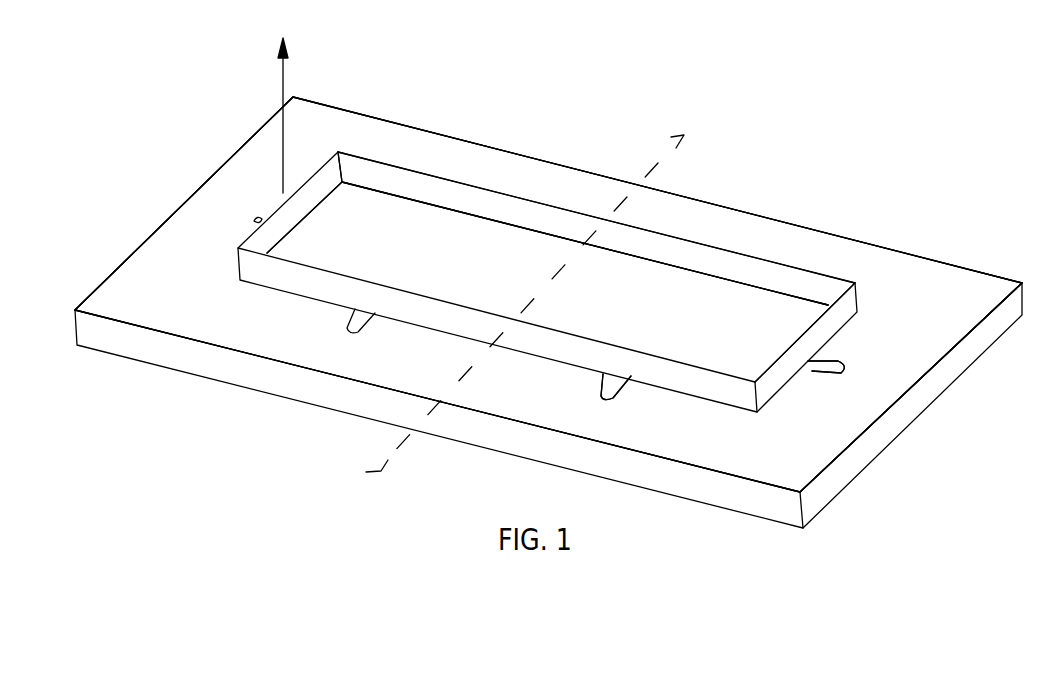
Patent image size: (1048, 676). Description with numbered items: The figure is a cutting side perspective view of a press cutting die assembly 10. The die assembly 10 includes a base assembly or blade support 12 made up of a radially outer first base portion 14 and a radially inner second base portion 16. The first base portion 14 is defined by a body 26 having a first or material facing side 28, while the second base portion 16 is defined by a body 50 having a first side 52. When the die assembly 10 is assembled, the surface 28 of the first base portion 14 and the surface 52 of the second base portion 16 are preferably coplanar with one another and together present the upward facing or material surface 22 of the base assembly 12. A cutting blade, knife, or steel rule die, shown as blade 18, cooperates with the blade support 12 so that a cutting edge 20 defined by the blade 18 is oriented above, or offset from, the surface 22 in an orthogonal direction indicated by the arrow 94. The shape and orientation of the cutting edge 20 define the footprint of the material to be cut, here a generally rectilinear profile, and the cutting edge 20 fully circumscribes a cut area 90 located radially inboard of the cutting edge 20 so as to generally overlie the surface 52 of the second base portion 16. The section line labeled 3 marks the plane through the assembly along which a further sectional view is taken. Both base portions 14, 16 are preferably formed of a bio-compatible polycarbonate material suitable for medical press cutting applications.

The press cutting die assembly 10 is at (928, 133).
The base assembly 12 is at (816, 198).
The first base portion 14 is at (976, 293).
The second base portion 16 is at (470, 220).
The blade 18 is at (226, 265).
The cutting edge 20 is at (720, 245).
The upward facing surface 22 is at (893, 291).
The body 26 is at (872, 358).
The material facing side 28 is at (678, 437).
The body 50 is at (522, 275).
The first side 52 is at (702, 318).
The cut area 90 is at (367, 167).
The arrow 94 is at (283, 95).
The section line 3- 3 is at (648, 125).